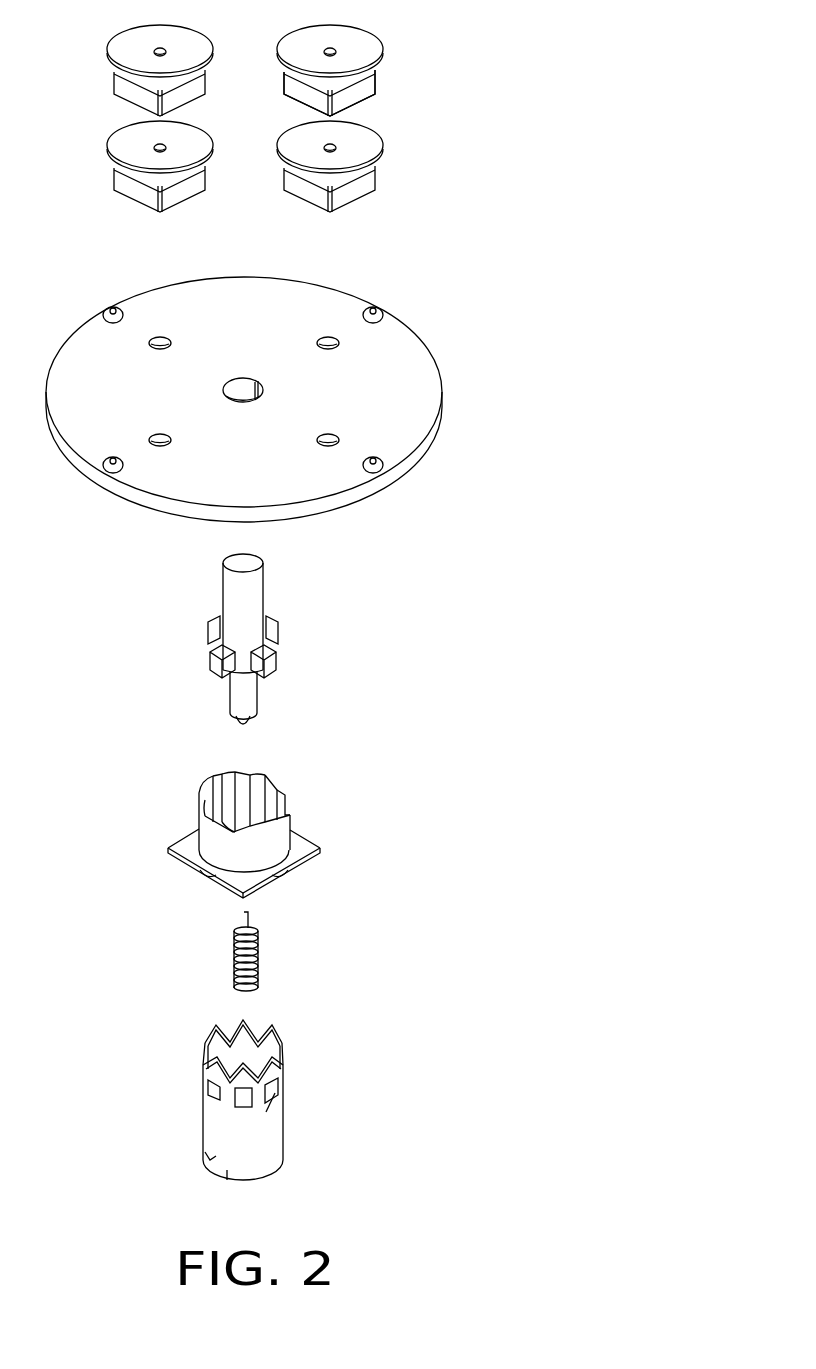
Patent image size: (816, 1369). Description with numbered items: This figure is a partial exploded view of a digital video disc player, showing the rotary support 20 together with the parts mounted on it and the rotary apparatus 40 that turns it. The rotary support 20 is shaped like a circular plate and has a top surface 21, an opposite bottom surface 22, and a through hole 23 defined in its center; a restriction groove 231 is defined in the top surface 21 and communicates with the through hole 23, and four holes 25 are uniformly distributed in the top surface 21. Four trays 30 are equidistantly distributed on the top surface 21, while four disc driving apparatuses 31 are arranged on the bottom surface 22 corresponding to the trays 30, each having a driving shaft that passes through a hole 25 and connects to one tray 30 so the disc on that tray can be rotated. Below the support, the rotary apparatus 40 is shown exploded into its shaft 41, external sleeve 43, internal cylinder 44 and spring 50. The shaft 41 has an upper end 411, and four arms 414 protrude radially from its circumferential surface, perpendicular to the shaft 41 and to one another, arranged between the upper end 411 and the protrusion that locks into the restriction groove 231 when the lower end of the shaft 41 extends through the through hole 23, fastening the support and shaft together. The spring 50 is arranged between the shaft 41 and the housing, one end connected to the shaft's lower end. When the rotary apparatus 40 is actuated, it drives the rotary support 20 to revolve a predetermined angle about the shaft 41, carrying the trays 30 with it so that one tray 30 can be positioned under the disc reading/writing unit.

The rotary support 20 is at (291, 370).
The top surface 21 is at (397, 357).
The bottom surface 22 is at (417, 467).
The through hole 23 is at (237, 388).
The restriction groove 231 is at (260, 382).
The holes 25 is at (160, 333).
The trays 30 is at (360, 47).
The disc driving apparatuses 31 is at (358, 87).
The rotary apparatus 40 is at (312, 867).
The shaft 41 is at (271, 639).
The upper end 411 is at (240, 602).
The arms 414 is at (217, 666).
The external sleeve 43 is at (300, 845).
The internal cylinder 44 is at (313, 1088).
The spring 50 is at (233, 970).